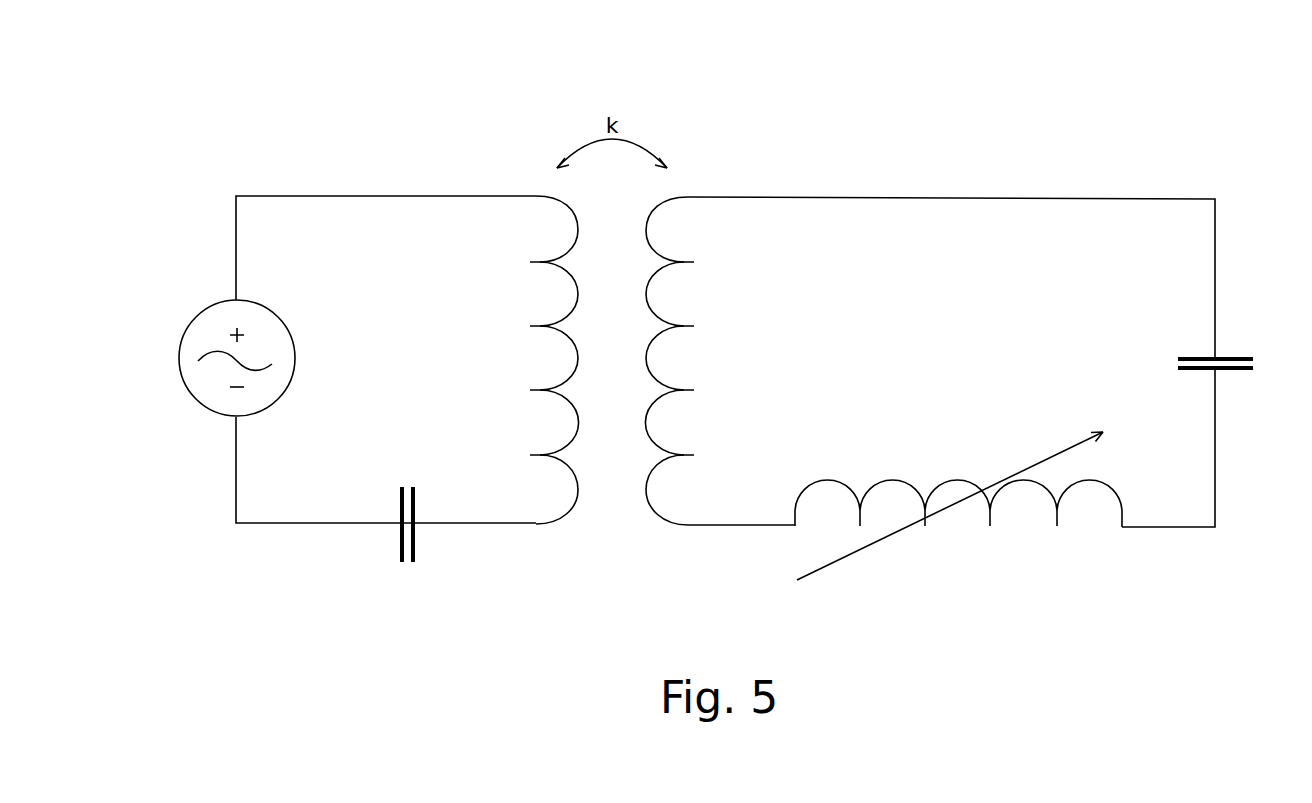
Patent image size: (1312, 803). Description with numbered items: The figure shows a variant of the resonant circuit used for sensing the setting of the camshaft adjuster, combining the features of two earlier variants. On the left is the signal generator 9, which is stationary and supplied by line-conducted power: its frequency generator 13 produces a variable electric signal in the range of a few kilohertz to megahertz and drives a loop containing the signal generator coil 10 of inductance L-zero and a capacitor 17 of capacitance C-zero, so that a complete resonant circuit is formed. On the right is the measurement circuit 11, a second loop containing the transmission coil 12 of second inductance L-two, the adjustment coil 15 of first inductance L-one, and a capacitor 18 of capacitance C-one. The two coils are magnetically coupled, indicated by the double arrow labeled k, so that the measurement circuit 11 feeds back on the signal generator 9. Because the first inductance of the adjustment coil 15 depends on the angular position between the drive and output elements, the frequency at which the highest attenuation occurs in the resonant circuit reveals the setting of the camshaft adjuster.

The signal generator 9 is at (385, 123).
The measurement circuit 11 is at (973, 130).
The frequency generator 13 is at (178, 357).
The signal generator coil 10 is at (580, 493).
The transmission coil 12 is at (658, 528).
The adjustment coil 15 is at (1080, 497).
The capacitor 17 is at (382, 545).
The capacitor 18 is at (1227, 373).